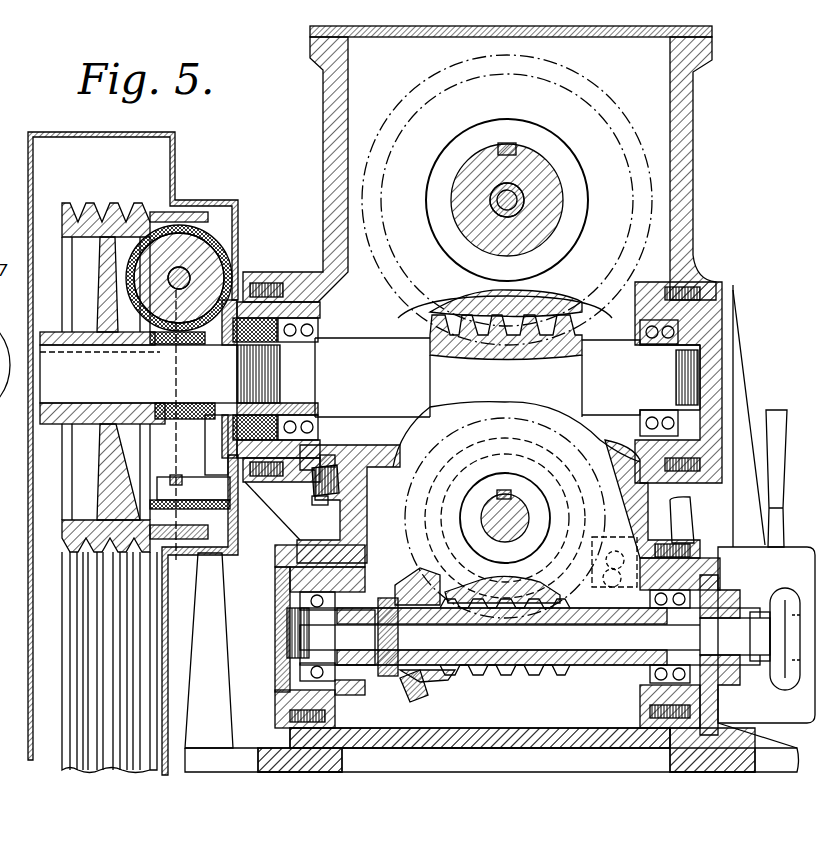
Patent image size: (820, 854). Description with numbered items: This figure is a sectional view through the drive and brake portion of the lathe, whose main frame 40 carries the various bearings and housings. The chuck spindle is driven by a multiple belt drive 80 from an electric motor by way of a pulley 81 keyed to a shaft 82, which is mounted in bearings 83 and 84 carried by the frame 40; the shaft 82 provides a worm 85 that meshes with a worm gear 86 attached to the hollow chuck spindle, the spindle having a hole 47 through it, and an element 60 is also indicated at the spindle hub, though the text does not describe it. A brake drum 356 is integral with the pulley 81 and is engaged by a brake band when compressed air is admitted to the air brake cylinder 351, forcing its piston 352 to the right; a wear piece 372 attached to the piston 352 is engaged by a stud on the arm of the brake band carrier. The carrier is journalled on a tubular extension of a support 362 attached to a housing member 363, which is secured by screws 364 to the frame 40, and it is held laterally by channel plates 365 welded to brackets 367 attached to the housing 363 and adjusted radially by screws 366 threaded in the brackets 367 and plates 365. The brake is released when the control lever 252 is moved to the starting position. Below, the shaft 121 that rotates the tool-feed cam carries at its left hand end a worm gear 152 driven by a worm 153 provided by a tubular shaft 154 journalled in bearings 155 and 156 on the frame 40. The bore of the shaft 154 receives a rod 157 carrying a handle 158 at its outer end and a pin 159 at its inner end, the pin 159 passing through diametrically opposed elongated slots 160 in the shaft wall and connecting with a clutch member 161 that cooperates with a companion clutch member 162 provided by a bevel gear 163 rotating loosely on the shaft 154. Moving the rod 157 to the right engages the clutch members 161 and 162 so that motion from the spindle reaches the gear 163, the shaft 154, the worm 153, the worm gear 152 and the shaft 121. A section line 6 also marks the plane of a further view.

The section line 6 is at (178, 300).
The main frame 40 is at (325, 146).
The hole 47 is at (520, 206).
The hub key 60 is at (528, 193).
The multiple belt drive 80 is at (64, 691).
The pulley 81 is at (64, 535).
The shaft 82 is at (50, 352).
The bearing 83 is at (300, 328).
The bearing 84 is at (640, 330).
The worm 85 is at (430, 328).
The worm gear 86 is at (610, 102).
The shaft 121 is at (520, 508).
The worm gear 152 is at (440, 478).
The worm 153 is at (498, 600).
The shaft 154 is at (575, 665).
The bearing 155 is at (330, 590).
The bearing 156 is at (655, 683).
The rod 157 is at (518, 662).
The handle 158 is at (788, 596).
The pin 159 is at (384, 596).
The slots 160 is at (362, 668).
The clutch member 161 is at (388, 675).
The clutch member 162 is at (455, 690).
The bevel gear 163 is at (450, 672).
The control lever 252 is at (776, 410).
The air brake cylinder 351 is at (232, 290).
The piston 352 is at (162, 346).
The brake drum 356 is at (200, 212).
The support 362 is at (232, 345).
The housing member 363 is at (235, 245).
The screws 364 is at (258, 278).
The channel plates 365 is at (157, 488).
The screws 366 is at (175, 474).
The brackets 367 is at (194, 470).
The wear piece 372 is at (195, 268).